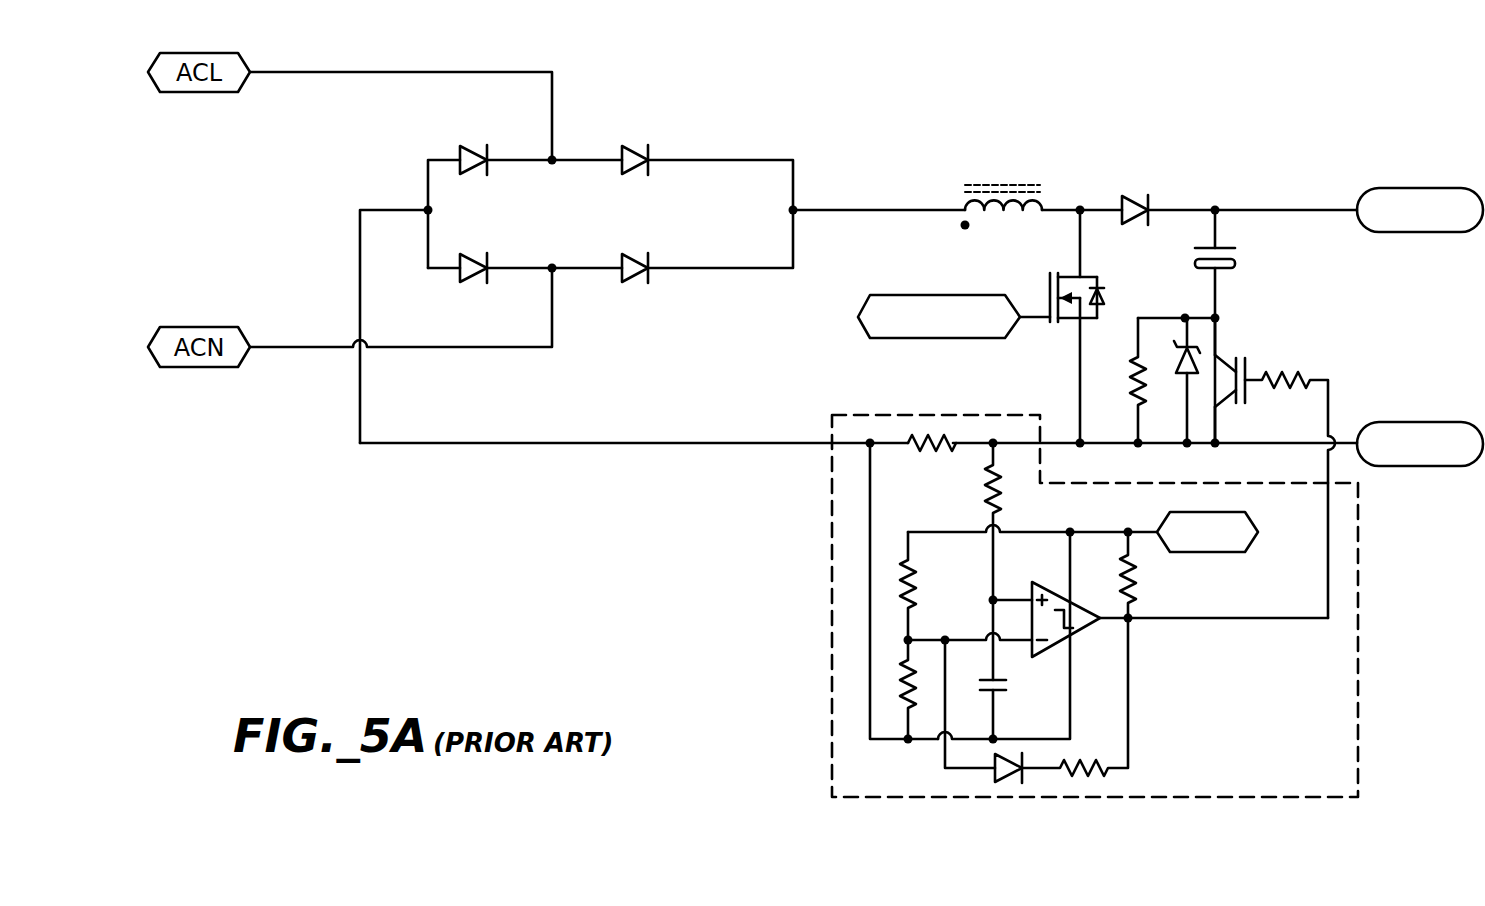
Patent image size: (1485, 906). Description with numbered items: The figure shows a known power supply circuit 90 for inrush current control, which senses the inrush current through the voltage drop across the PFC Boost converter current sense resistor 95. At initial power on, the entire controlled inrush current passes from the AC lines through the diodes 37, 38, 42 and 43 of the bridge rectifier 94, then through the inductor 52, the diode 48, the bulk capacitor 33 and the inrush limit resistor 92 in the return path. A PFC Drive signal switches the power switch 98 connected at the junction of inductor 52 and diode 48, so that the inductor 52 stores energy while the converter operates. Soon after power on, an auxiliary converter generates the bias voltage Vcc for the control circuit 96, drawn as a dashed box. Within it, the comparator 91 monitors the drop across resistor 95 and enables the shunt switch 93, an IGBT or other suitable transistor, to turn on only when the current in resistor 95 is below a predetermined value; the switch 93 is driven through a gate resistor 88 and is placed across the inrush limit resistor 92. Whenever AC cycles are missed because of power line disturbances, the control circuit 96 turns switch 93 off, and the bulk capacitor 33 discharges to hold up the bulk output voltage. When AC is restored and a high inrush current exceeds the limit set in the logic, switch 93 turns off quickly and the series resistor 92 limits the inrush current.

The bridge rectifier 94 is at (596, 86).
The diode 42 is at (466, 146).
The diode 43 is at (468, 254).
The diode 37 is at (632, 145).
The diode 38 is at (630, 254).
The power supply circuit 90 is at (1232, 145).
The inductor 52 is at (1022, 206).
The diode 48 is at (1133, 196).
The power switch 98 is at (1090, 276).
The bulk capacitor 33 is at (1224, 270).
The inrush limit resistor 92 is at (1124, 382).
The shunt switch 93 is at (1248, 364).
The resistor 88 is at (1294, 376).
The current sense resistor 95 is at (935, 450).
The control circuit 96 is at (830, 575).
The comparator 91 is at (1080, 632).